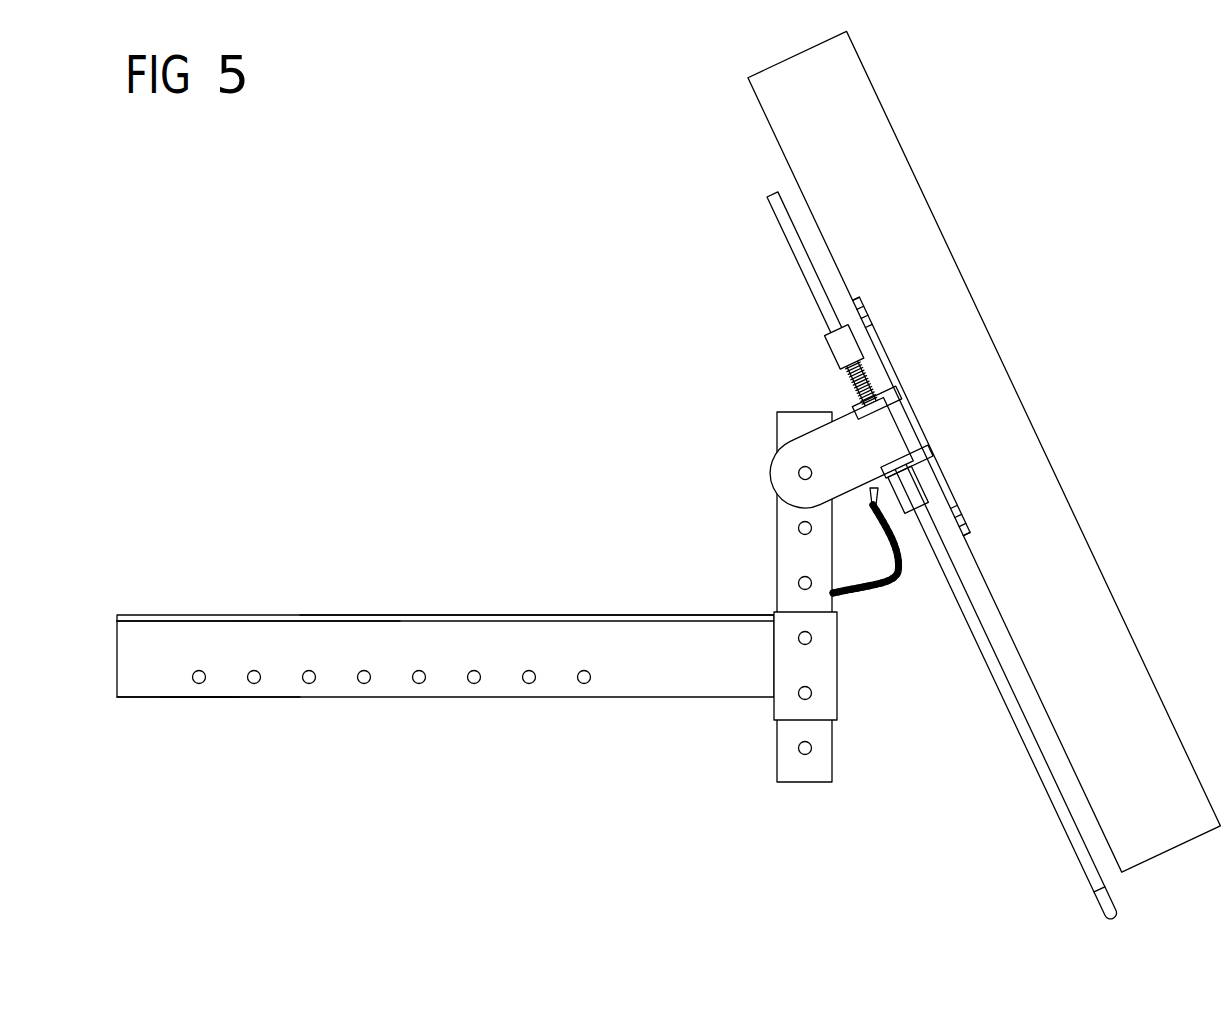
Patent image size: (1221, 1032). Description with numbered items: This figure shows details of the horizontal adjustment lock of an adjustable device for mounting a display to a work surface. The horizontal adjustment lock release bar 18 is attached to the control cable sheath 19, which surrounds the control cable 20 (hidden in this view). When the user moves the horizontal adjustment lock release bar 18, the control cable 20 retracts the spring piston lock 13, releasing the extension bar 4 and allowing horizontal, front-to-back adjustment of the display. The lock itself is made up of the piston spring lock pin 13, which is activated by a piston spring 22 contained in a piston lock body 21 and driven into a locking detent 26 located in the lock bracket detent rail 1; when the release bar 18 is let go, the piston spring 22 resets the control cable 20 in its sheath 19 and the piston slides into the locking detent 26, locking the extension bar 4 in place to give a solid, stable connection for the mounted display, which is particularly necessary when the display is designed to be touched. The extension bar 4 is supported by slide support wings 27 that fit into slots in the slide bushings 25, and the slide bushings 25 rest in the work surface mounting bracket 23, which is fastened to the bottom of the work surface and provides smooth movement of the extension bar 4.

The lock bracket detent rail 1 is at (445, 711).
The extension bar 4 is at (756, 597).
The spring piston lock 13 is at (208, 784).
The horizontal adjustment lock release bar 18 is at (942, 556).
The control cable sheath 19 is at (902, 652).
The control cable 20 is at (897, 562).
The piston lock body 21 is at (240, 754).
The piston spring 22 is at (213, 772).
The work surface mounting bracket 23 is at (537, 569).
The slide bushings 25 is at (320, 581).
The locking detent 26 is at (294, 728).
The slide support wings 27 is at (197, 585).